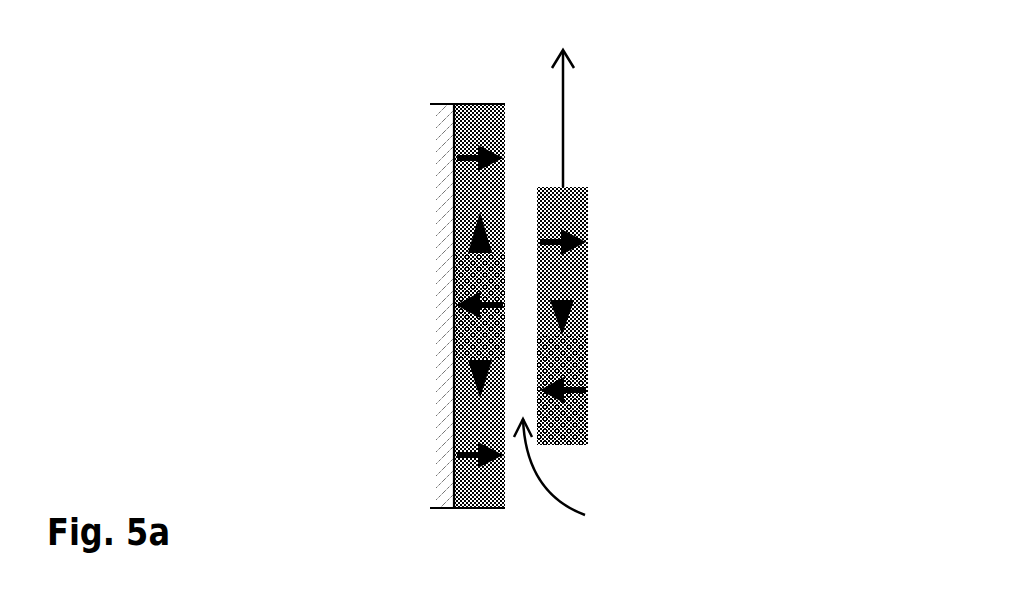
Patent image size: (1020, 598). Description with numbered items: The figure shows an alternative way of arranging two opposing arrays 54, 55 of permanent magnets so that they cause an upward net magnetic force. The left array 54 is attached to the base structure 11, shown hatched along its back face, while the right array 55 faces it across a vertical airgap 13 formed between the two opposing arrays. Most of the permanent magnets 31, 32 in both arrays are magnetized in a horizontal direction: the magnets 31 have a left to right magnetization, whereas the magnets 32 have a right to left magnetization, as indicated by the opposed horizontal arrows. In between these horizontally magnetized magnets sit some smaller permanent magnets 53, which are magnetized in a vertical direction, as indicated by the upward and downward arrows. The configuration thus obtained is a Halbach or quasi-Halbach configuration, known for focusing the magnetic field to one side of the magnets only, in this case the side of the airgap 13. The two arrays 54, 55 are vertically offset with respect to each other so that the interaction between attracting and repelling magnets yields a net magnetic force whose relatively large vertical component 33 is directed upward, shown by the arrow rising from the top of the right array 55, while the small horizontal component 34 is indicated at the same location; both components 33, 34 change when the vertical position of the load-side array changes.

The base structure 11 is at (438, 177).
The vertical airgap 13 is at (583, 479).
The permanent magnet with left to right magnetization 31 is at (453, 474).
The permanent magnet with right to left magnetization 32 is at (453, 335).
The vertical component of net magnetic force 33 is at (562, 128).
The horizontal component of net magnetic force 34 is at (564, 189).
The vertically magnetized permanent magnet 53 is at (453, 386).
The first opposing array 54 is at (443, 49).
The second opposing array 55 is at (643, 473).